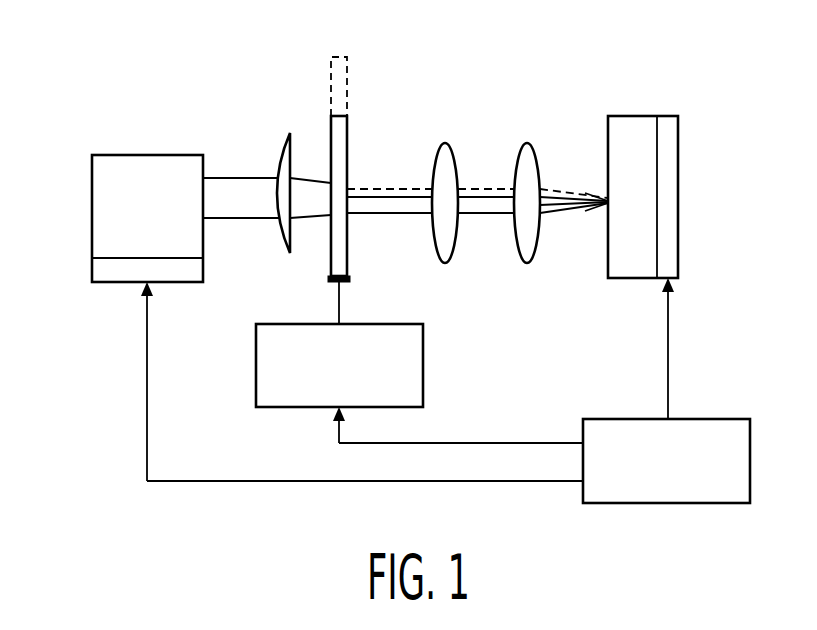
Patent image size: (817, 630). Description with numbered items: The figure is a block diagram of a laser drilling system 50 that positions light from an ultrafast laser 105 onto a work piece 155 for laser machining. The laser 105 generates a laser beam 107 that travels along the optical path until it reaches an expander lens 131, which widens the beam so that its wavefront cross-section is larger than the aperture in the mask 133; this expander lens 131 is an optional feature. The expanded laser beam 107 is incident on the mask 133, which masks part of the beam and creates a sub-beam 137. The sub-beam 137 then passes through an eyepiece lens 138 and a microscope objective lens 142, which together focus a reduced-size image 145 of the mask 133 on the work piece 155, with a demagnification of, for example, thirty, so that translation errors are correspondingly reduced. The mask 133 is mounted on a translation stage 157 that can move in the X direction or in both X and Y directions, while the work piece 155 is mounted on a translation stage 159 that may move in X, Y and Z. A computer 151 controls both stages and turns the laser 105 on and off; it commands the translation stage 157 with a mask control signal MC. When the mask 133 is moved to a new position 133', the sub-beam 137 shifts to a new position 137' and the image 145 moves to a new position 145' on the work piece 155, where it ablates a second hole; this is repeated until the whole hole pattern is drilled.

The laser drilling system 50 is at (60, 72).
The ultrafast laser 105 is at (144, 154).
The laser beam 107 is at (242, 219).
The expander lens 131 is at (285, 133).
The mask 133 is at (372, 220).
The mask in new position 133' is at (293, 71).
The sub-beam 137 is at (430, 236).
The sub-beam in new position 137' is at (430, 155).
The eyepiece lens 138 is at (444, 143).
The microscope objective lens 142 is at (526, 143).
The image 145 is at (574, 238).
The image in new position 145' is at (574, 162).
The work piece 155 is at (631, 116).
The translation stage 159 is at (680, 193).
The translation stage 157 is at (423, 365).
The computer 151 is at (712, 419).
The mask control signal MC is at (437, 443).